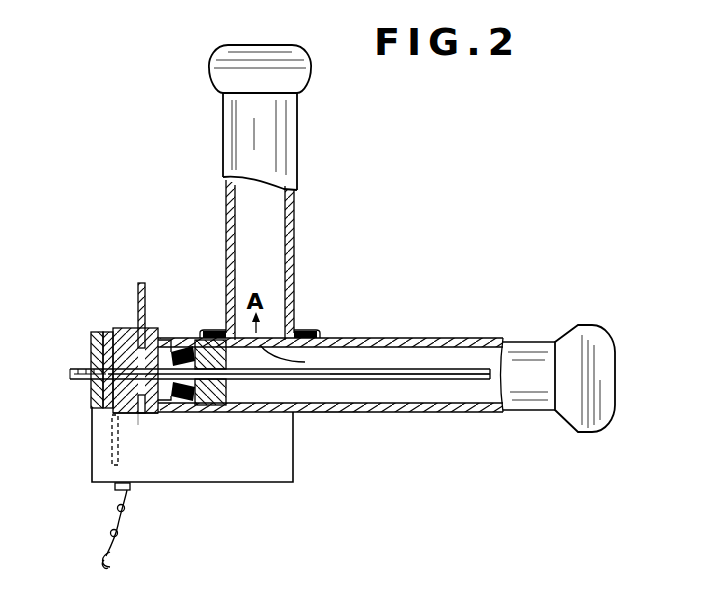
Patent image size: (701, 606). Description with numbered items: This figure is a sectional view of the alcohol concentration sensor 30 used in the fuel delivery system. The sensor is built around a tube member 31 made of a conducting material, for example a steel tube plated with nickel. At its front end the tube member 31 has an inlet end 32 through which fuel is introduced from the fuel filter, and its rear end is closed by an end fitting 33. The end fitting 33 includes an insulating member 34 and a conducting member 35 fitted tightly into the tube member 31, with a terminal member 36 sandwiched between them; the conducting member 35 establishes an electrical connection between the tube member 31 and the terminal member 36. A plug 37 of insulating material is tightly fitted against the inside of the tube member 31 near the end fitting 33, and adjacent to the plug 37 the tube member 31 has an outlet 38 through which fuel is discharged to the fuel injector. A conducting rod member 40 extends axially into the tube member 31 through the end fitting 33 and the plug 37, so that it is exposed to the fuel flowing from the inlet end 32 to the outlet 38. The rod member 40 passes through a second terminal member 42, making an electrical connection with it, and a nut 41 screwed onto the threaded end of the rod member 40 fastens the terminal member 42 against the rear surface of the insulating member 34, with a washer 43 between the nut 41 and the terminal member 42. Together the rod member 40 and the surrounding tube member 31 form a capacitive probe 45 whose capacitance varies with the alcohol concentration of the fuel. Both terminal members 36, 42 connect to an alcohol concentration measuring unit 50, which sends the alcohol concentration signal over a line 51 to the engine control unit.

The alcohol concentration sensor 30 is at (127, 204).
The tube member 31 is at (481, 338).
The inlet end 32 is at (605, 403).
The end fitting 33 is at (139, 430).
The insulating member 34 is at (167, 412).
The conducting member 35 is at (160, 343).
The terminal member 36 is at (138, 300).
The plug 37 is at (215, 412).
The outlet 38 is at (295, 230).
The conducting rod member 40 is at (398, 375).
The nut 41 is at (95, 397).
The terminal member 42 is at (110, 435).
The washer 43 is at (99, 330).
The capacitive probe 45 is at (329, 420).
The alcohol concentration measuring unit 50 is at (178, 473).
The line 51 is at (115, 555).